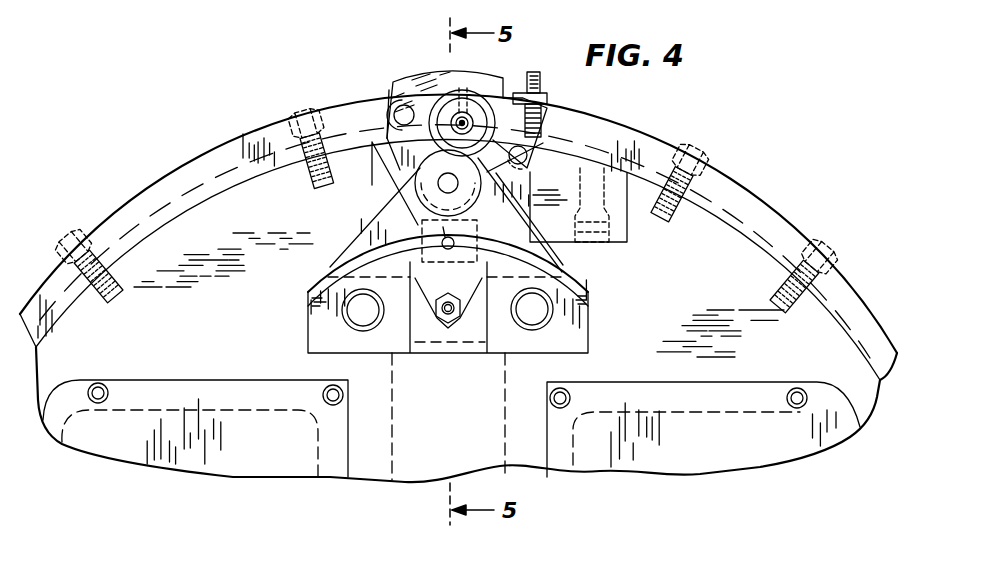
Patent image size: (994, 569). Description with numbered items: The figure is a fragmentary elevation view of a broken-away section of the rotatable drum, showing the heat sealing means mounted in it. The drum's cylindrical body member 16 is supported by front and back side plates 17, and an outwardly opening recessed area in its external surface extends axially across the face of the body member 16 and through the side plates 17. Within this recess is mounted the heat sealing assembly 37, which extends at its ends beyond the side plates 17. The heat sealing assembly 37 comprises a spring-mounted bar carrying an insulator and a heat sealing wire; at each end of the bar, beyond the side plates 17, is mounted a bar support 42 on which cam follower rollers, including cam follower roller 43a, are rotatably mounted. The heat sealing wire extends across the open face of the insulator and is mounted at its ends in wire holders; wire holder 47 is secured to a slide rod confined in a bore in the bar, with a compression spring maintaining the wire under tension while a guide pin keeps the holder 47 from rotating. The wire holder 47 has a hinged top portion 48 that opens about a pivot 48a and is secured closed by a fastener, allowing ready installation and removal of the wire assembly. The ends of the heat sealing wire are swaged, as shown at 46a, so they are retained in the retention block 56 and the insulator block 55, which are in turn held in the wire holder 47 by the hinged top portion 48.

The cylindrical body member 16 is at (740, 190).
The side plates 17 is at (735, 272).
The heat sealing assembly 37 is at (500, 80).
The bar support 42 is at (546, 324).
The cam follower roller 43a is at (398, 160).
The swaged end of heat sealing wire 46a is at (460, 118).
The wire holder 47 is at (402, 167).
The hinged top portion 48 is at (406, 84).
The pivot 48a is at (403, 115).
The insulator block 55 is at (547, 110).
The retention block 56 is at (482, 138).